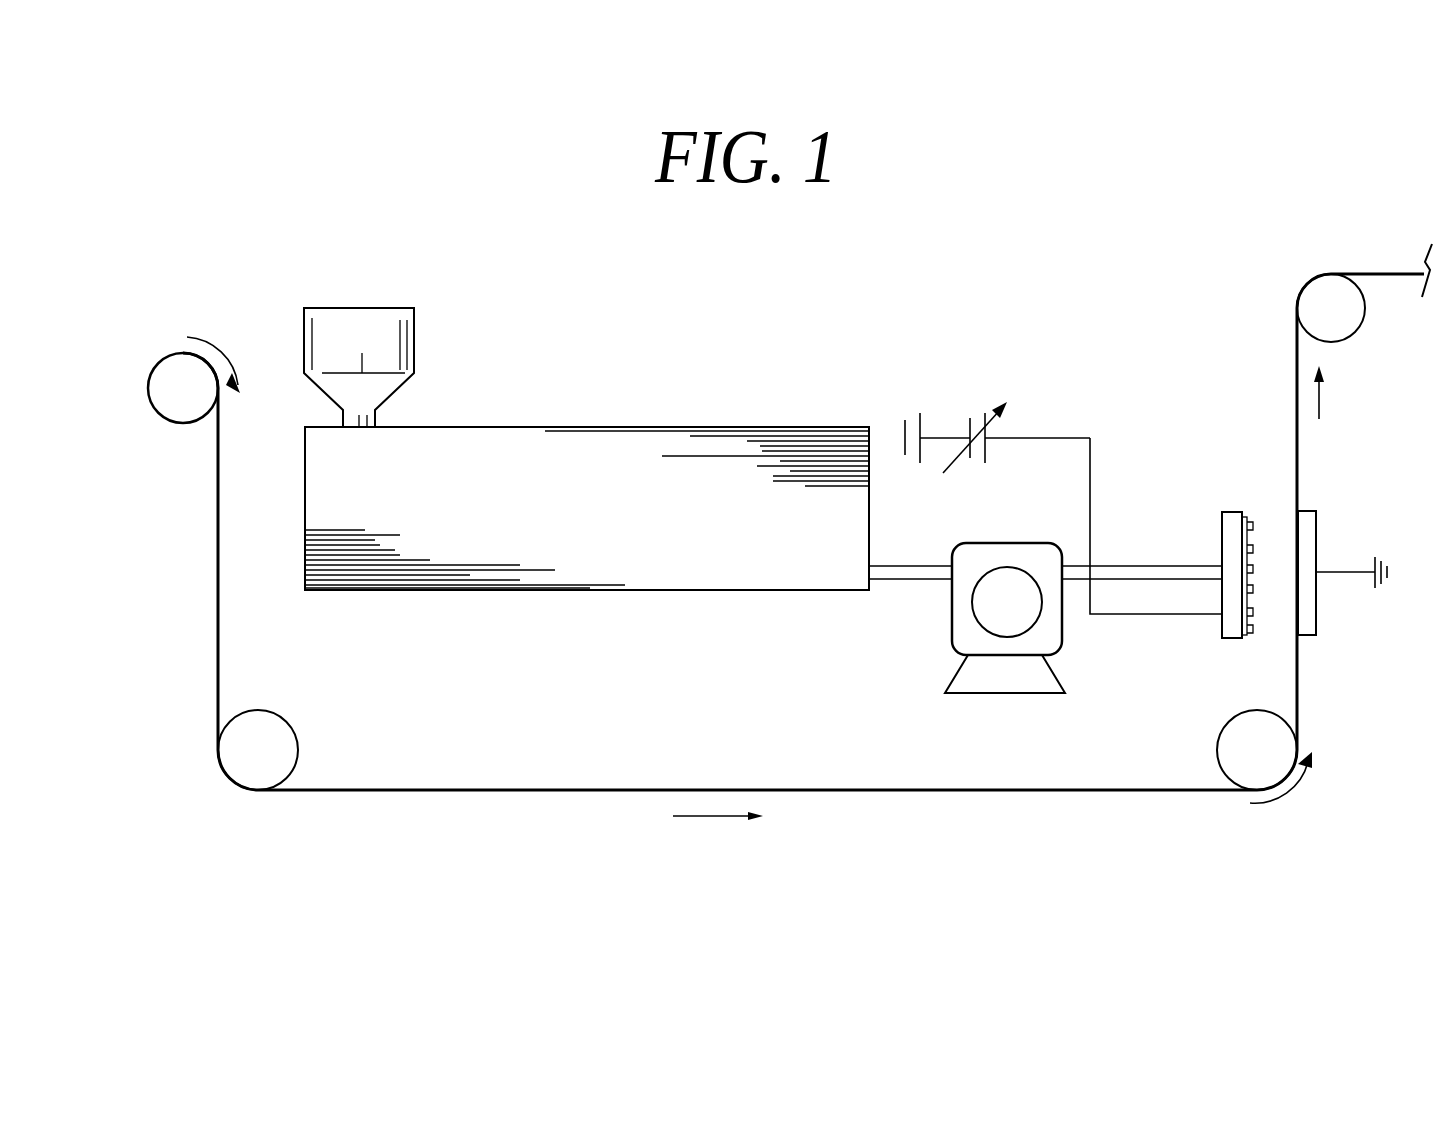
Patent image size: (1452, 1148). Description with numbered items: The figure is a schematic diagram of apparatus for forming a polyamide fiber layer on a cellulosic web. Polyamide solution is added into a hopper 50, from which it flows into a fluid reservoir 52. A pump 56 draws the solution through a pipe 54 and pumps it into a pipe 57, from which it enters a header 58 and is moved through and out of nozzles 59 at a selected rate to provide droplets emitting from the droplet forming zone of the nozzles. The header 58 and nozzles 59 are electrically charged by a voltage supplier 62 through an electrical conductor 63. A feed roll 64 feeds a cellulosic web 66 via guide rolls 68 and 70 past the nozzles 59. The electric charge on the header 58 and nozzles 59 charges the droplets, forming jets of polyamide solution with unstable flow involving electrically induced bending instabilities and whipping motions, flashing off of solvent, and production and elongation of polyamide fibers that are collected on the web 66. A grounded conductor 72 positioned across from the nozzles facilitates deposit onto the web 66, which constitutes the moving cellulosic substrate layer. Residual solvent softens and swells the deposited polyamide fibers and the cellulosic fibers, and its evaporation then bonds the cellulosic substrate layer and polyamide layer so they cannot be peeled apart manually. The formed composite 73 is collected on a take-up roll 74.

The hopper 50 is at (372, 348).
The fluid reservoir 52 is at (645, 425).
The pipe 54 is at (897, 583).
The pump 56 is at (1003, 543).
The pipe 57 is at (1137, 561).
The header 58 is at (1232, 638).
The nozzles 59 is at (1254, 516).
The voltage supplier 62 is at (955, 413).
The electrical conductor 63 is at (1073, 438).
The feed roll 64 is at (168, 357).
The cellulosic web 66 is at (217, 582).
The guide roll 68 is at (263, 733).
The guide roll 70 is at (1240, 755).
The grounded conductor 72 is at (1318, 540).
The formed composite 73 is at (1298, 438).
The take-up roll 74 is at (1352, 313).